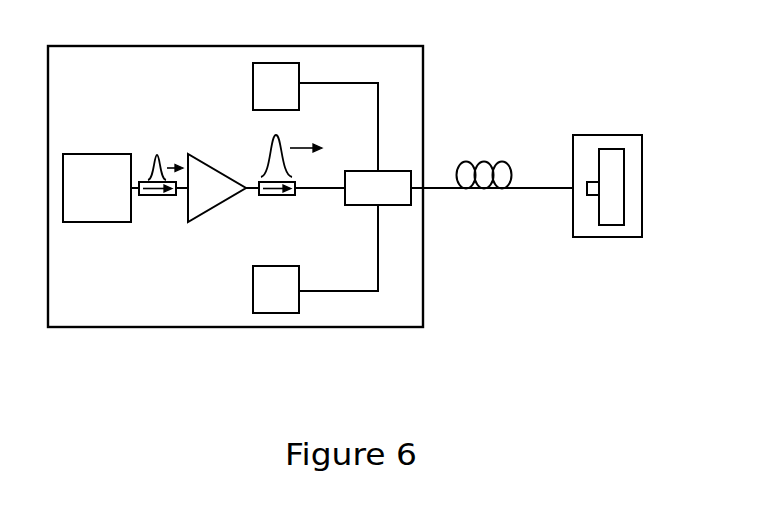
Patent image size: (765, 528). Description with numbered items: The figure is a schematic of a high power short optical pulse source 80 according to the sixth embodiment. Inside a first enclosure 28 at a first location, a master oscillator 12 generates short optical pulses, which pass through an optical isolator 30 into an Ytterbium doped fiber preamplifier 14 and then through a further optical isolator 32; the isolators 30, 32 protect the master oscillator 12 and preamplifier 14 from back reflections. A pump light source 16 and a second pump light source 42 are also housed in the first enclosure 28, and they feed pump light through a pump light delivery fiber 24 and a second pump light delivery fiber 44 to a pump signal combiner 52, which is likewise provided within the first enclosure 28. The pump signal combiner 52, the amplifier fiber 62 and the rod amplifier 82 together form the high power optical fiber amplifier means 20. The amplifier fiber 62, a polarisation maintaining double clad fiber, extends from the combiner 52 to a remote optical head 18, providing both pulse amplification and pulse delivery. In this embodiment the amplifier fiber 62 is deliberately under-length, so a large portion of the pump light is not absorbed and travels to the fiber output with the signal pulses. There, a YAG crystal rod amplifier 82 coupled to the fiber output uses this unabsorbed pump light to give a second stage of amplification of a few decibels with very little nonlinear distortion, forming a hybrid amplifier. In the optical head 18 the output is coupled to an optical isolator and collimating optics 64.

The master oscillator 12 is at (93, 208).
The preamplifier 14 is at (208, 197).
The pump light source 16 is at (253, 83).
The optical head 18 is at (612, 237).
The high power optical fiber amplifier means 20 is at (521, 275).
The pump light delivery fiber 24 is at (380, 102).
The first enclosure 28 is at (355, 327).
The optical isolator 30 is at (155, 195).
The optical isolator 32 is at (273, 195).
The second pump light source 42 is at (253, 291).
The second pump light delivery fiber 44 is at (378, 260).
The pump signal combiner 52 is at (392, 177).
The amplifier fiber 62 is at (523, 188).
The optical isolator and collimating optics 64 is at (614, 165).
The high power short optical pulse source 80 is at (132, 345).
The rod amplifier 82 is at (590, 184).